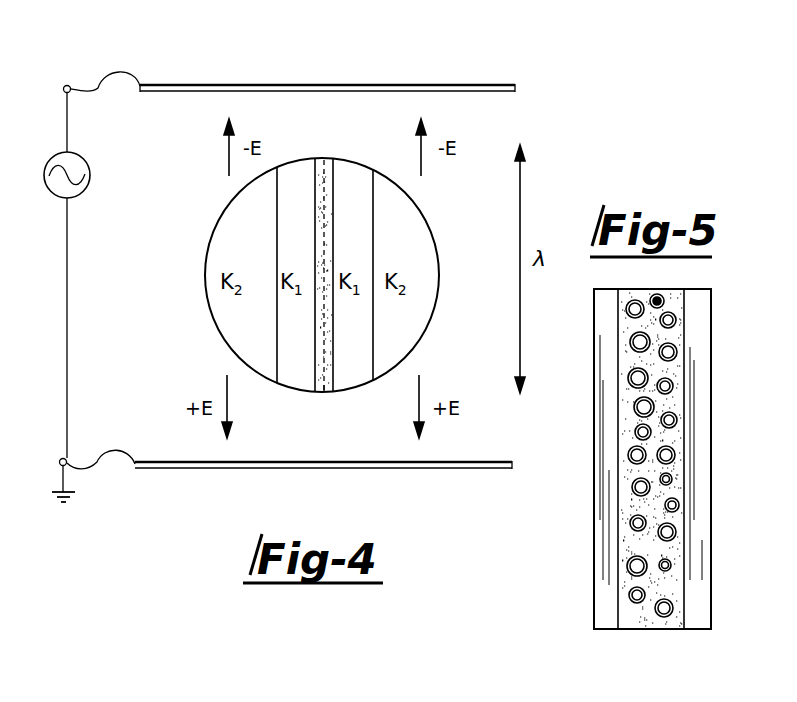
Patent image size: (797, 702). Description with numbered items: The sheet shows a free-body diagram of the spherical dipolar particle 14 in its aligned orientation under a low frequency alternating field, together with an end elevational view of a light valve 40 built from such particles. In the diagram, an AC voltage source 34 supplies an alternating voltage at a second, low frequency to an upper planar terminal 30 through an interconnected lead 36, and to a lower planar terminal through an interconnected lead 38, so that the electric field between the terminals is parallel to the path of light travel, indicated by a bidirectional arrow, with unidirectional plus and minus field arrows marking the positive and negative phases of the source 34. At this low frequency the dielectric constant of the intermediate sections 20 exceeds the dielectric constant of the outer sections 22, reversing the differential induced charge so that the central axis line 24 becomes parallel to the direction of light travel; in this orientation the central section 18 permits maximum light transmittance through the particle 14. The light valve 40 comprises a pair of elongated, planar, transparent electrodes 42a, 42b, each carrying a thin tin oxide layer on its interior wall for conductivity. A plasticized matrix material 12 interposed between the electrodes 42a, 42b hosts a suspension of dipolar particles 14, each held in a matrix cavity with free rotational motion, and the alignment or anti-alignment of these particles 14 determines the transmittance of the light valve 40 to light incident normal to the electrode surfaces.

In FIG. 5, the matrix material 12 is at (636, 612).
In FIG. 5, the spherical dipolar particle 14 is at (672, 478).
In FIG. 4, the central section 18 is at (323, 395).
In FIG. 4, the intermediate sections 20 is at (295, 385).
In FIG. 4, the outer sections 22 is at (228, 340).
In FIG. 4, the central axis line 24 is at (325, 151).
In FIG. 4, the planar terminal 30 is at (474, 65).
In FIG. 4, the AC voltage source 34 is at (60, 198).
In FIG. 4, the lead 36 is at (100, 91).
In FIG. 4, the lead 38 is at (101, 453).
In FIG. 5, the light valve 40 is at (568, 595).
In FIG. 5, the transparent electrode 42a is at (596, 308).
In FIG. 5, the transparent electrode 42b is at (700, 620).